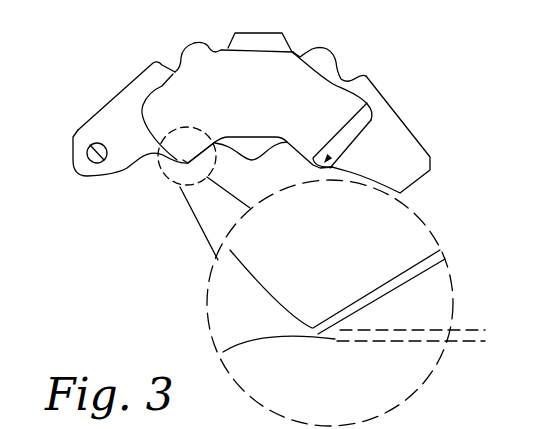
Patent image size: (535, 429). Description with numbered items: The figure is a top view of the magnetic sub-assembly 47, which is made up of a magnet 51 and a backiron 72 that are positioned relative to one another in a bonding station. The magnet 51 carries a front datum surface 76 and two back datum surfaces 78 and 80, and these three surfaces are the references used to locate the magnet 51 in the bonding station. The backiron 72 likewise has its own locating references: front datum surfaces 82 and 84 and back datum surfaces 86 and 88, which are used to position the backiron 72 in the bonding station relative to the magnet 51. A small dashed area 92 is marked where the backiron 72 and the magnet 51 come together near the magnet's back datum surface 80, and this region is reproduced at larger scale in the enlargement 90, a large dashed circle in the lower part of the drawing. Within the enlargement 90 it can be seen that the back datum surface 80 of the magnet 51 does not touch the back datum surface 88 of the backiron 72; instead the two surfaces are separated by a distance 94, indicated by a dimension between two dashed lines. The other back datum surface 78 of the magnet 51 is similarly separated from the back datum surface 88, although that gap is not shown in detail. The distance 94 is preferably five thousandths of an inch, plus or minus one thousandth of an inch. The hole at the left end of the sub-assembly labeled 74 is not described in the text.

The magnetic sub-assembly 47 is at (145, 52).
The magnet 51 is at (163, 90).
The pivot hole 74 is at (85, 146).
The front datum surface 82 is at (187, 35).
The front datum surface 76 is at (253, 43).
The front datum surface 84 is at (335, 50).
The back datum surface 78 is at (392, 98).
The back datum surface 86 is at (372, 128).
The backiron 72 is at (413, 167).
The back datum surface 80 is at (189, 151).
The area 92 is at (167, 183).
The enlargement 90 is at (202, 308).
The back datum surface 88 is at (307, 344).
The distance 94 is at (463, 360).